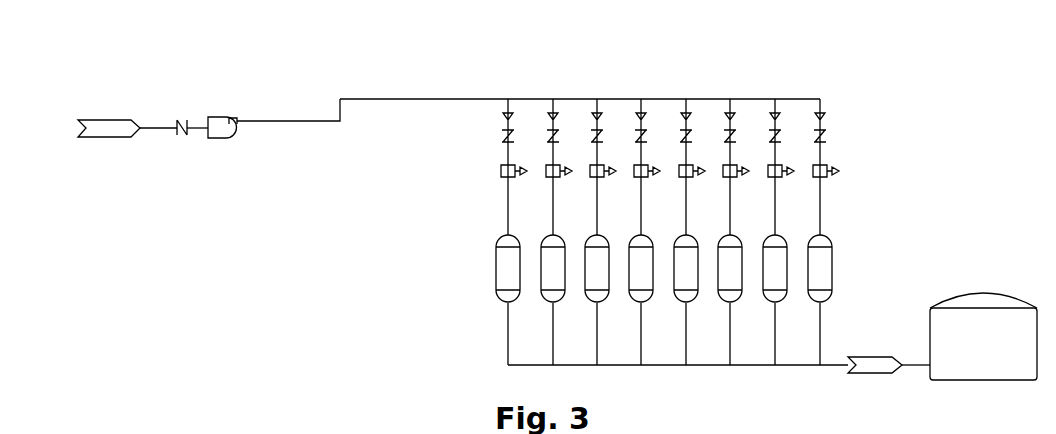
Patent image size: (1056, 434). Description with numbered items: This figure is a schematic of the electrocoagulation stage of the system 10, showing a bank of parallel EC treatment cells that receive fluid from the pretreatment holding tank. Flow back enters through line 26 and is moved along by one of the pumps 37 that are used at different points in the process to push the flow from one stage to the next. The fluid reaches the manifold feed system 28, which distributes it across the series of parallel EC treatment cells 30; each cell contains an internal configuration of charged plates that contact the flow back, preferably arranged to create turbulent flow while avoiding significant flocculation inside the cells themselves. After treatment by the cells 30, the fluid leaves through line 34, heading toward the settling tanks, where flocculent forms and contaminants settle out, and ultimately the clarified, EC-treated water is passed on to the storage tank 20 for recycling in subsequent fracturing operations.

The water treatment system 10 is at (889, 146).
The storage tank 20 is at (998, 297).
The line 26 is at (113, 126).
The manifold feed system 28 is at (491, 173).
The EC treatment cells 30 is at (842, 254).
The line 34 is at (890, 363).
The pumps 37 is at (228, 117).